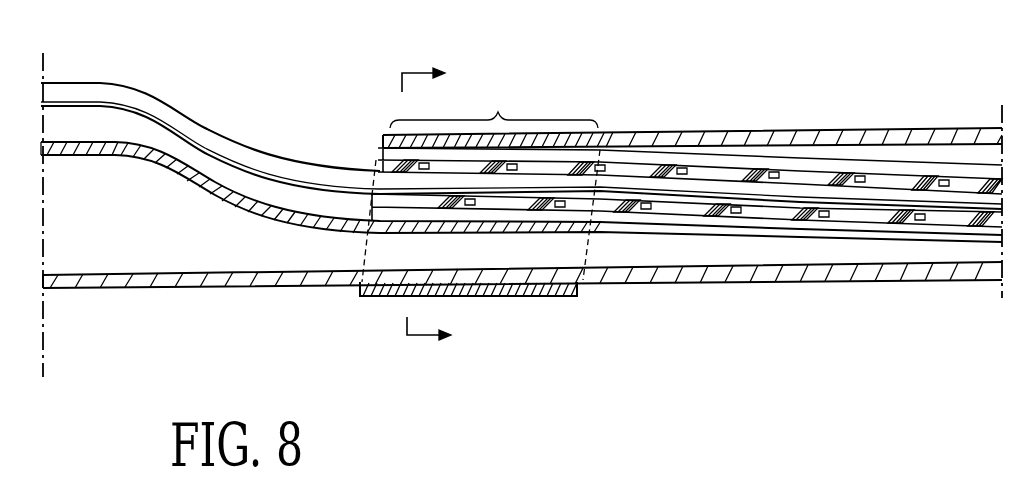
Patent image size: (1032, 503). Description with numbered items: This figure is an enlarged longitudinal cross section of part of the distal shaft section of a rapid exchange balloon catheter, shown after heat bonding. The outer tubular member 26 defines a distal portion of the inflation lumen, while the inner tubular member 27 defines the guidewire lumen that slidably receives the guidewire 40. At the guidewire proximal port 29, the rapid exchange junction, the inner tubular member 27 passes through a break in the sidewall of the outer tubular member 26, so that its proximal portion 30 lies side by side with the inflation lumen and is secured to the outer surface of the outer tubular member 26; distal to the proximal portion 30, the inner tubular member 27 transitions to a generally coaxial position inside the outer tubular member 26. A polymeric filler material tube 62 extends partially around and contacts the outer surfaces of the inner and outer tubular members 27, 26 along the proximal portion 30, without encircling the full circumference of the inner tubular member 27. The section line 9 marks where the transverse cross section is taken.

The outer tubular member 26 is at (698, 134).
The inner tubular member 27 is at (897, 168).
The guidewire proximal port 29 is at (377, 168).
The proximal portion of the inner tubular member 30 is at (494, 103).
The guidewire 40 is at (110, 88).
The polymeric filler material 62 is at (553, 296).
The section line 9- 9 is at (434, 205).